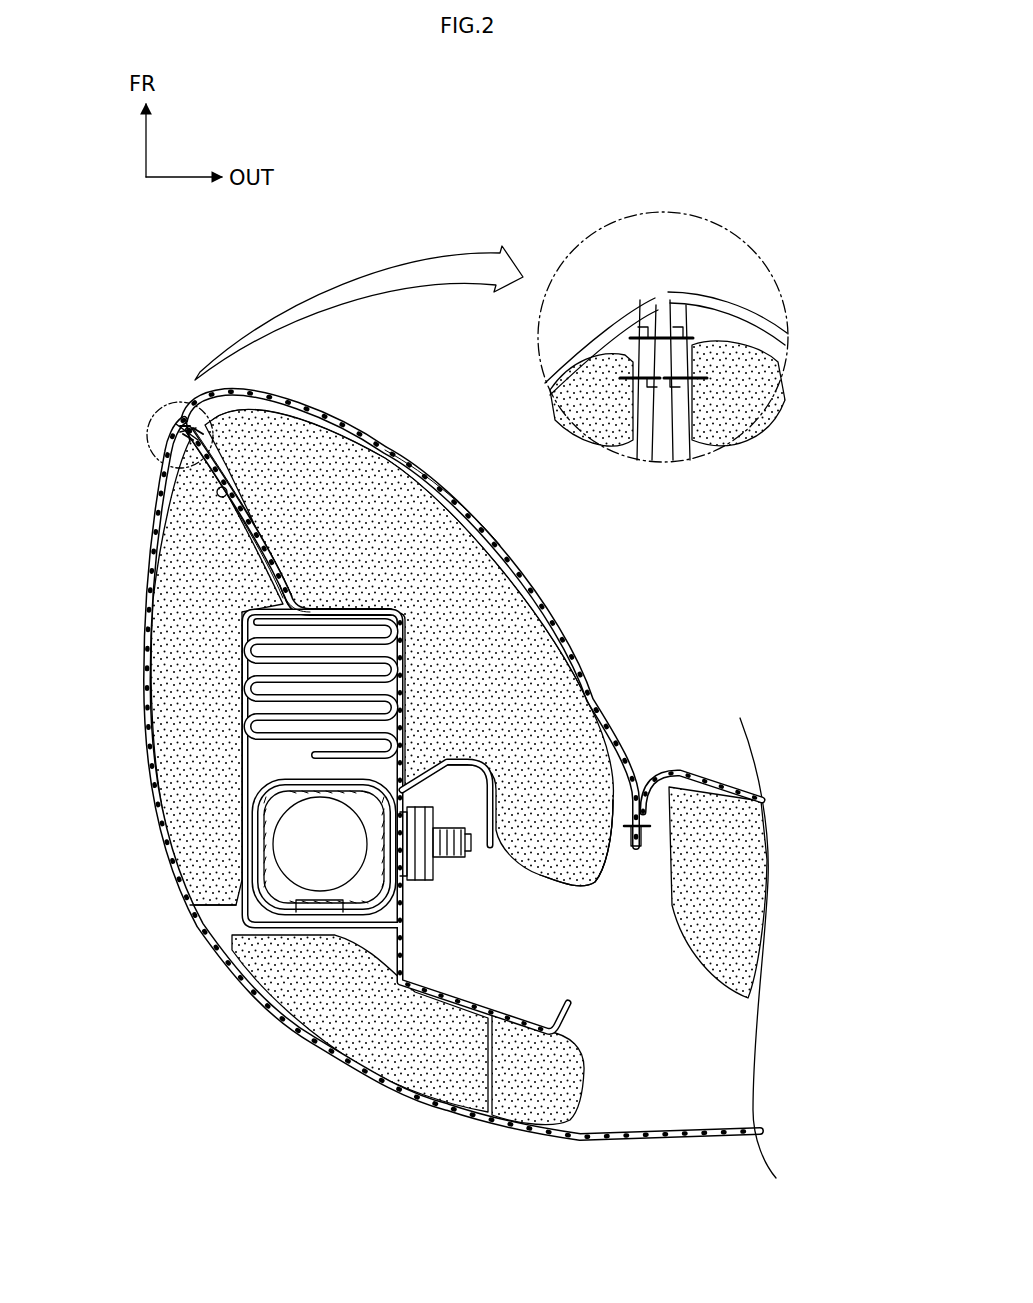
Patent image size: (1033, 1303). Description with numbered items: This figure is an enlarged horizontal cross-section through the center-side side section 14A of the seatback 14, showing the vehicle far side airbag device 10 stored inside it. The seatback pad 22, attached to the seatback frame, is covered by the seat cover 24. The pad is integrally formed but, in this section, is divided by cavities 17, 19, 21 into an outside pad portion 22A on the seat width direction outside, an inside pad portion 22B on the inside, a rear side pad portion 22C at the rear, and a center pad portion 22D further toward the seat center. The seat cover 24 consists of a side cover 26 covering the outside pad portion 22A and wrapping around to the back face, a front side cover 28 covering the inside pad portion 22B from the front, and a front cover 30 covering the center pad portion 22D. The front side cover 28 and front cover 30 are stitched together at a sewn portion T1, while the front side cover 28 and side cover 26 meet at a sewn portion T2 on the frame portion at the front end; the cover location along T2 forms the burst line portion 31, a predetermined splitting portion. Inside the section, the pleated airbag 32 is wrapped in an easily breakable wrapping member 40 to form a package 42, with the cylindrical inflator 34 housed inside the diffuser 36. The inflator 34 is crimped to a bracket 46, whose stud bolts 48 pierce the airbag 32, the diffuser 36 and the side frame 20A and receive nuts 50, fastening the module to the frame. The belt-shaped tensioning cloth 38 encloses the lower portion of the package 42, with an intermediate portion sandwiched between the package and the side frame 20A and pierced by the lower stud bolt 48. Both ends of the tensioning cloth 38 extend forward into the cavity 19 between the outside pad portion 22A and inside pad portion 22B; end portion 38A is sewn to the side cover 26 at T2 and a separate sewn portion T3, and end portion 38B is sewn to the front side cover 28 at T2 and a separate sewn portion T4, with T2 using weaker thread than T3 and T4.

The vehicle far side airbag device 10 is at (136, 291).
The seatback 14 is at (693, 662).
The center-side side section 14A is at (447, 452).
The cavity 17 is at (603, 852).
The cavity 19 is at (218, 497).
The side frame 20A is at (490, 1094).
The cavity 21 is at (232, 908).
The seatback pad 22 is at (577, 893).
The outside pad portion 22A is at (190, 662).
The inside pad portion 22B is at (458, 583).
The rear side pad portion 22C is at (410, 1057).
The center pad portion 22D is at (720, 947).
The seat cover 24 is at (526, 581).
The side cover 26 is at (246, 973).
The front side cover 28 is at (453, 507).
The front cover 30 is at (722, 786).
The burst line portion 31 is at (178, 395).
The airbag 32 is at (246, 701).
The inflator 34 is at (273, 843).
The diffuser 36 is at (252, 750).
The tensioning cloth 38 is at (232, 487).
The length direction end portion 38A is at (190, 458).
The length direction end portion 38B is at (218, 432).
The wrapping member 40 is at (242, 626).
The package 42 is at (268, 598).
The bracket 46 is at (256, 817).
The stud bolt 48 is at (472, 854).
The nut 50 is at (430, 883).
The sewn portion T1 is at (645, 836).
The sewn portion T2 is at (177, 425).
The sewn portion T3 is at (177, 436).
The sewn portion T4 is at (212, 433).